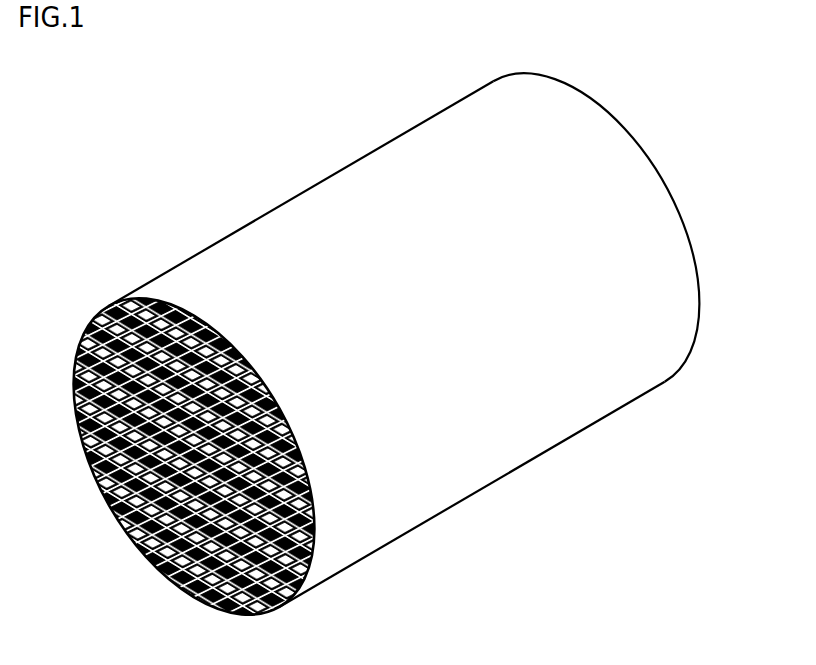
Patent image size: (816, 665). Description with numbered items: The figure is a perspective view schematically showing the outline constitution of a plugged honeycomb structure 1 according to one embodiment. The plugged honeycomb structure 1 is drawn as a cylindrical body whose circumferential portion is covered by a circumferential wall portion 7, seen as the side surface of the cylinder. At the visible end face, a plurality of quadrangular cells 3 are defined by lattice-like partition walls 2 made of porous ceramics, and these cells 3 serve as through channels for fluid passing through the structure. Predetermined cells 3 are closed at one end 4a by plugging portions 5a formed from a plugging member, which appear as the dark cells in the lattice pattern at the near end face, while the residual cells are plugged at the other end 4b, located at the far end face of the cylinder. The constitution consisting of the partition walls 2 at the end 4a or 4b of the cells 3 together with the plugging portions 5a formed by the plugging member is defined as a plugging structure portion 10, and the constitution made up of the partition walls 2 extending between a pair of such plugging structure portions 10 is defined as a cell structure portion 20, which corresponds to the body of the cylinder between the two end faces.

The plugged honeycomb structure 1 is at (145, 128).
The cell structure portion 20 is at (300, 185).
The partition walls 2 is at (88, 322).
The plugging structure portion 10 is at (202, 448).
The cells 3 is at (77, 364).
The plugging portions 5a is at (286, 418).
The one end 4a is at (202, 448).
The other end 4b is at (688, 242).
The circumferential wall portion 7 is at (513, 457).